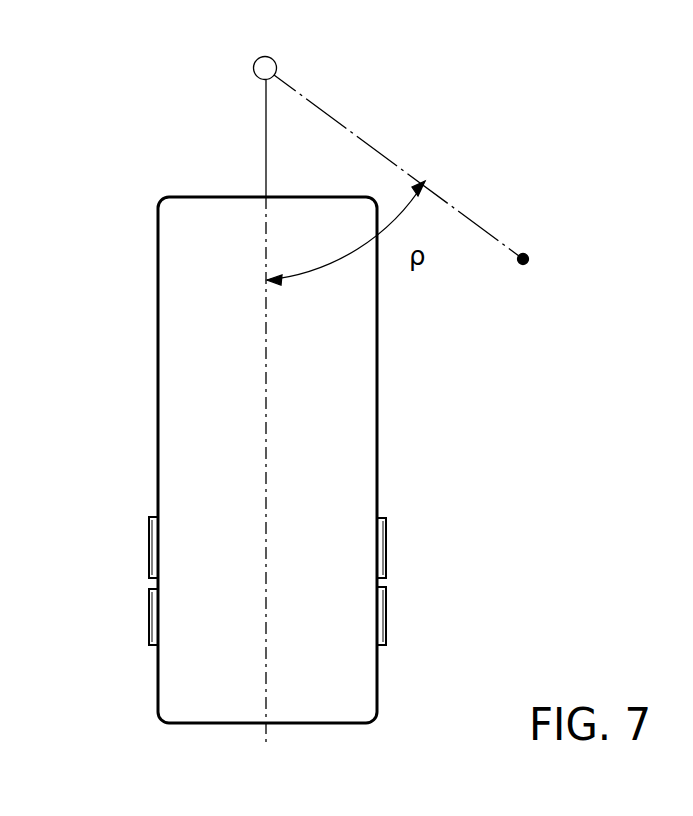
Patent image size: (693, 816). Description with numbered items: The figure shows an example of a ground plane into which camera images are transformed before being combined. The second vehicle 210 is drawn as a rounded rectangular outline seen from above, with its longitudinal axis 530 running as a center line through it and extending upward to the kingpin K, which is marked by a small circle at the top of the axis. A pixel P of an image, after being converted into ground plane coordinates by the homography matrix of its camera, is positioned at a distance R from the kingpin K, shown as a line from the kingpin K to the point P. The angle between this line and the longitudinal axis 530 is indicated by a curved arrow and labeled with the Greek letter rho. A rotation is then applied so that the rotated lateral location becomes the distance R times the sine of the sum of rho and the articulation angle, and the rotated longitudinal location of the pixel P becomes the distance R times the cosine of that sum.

The second vehicle 210 is at (157, 350).
The longitudinal axis 530 is at (265, 151).
The kingpin K is at (264, 53).
The pixel P is at (413, 175).
The distance R is at (394, 162).